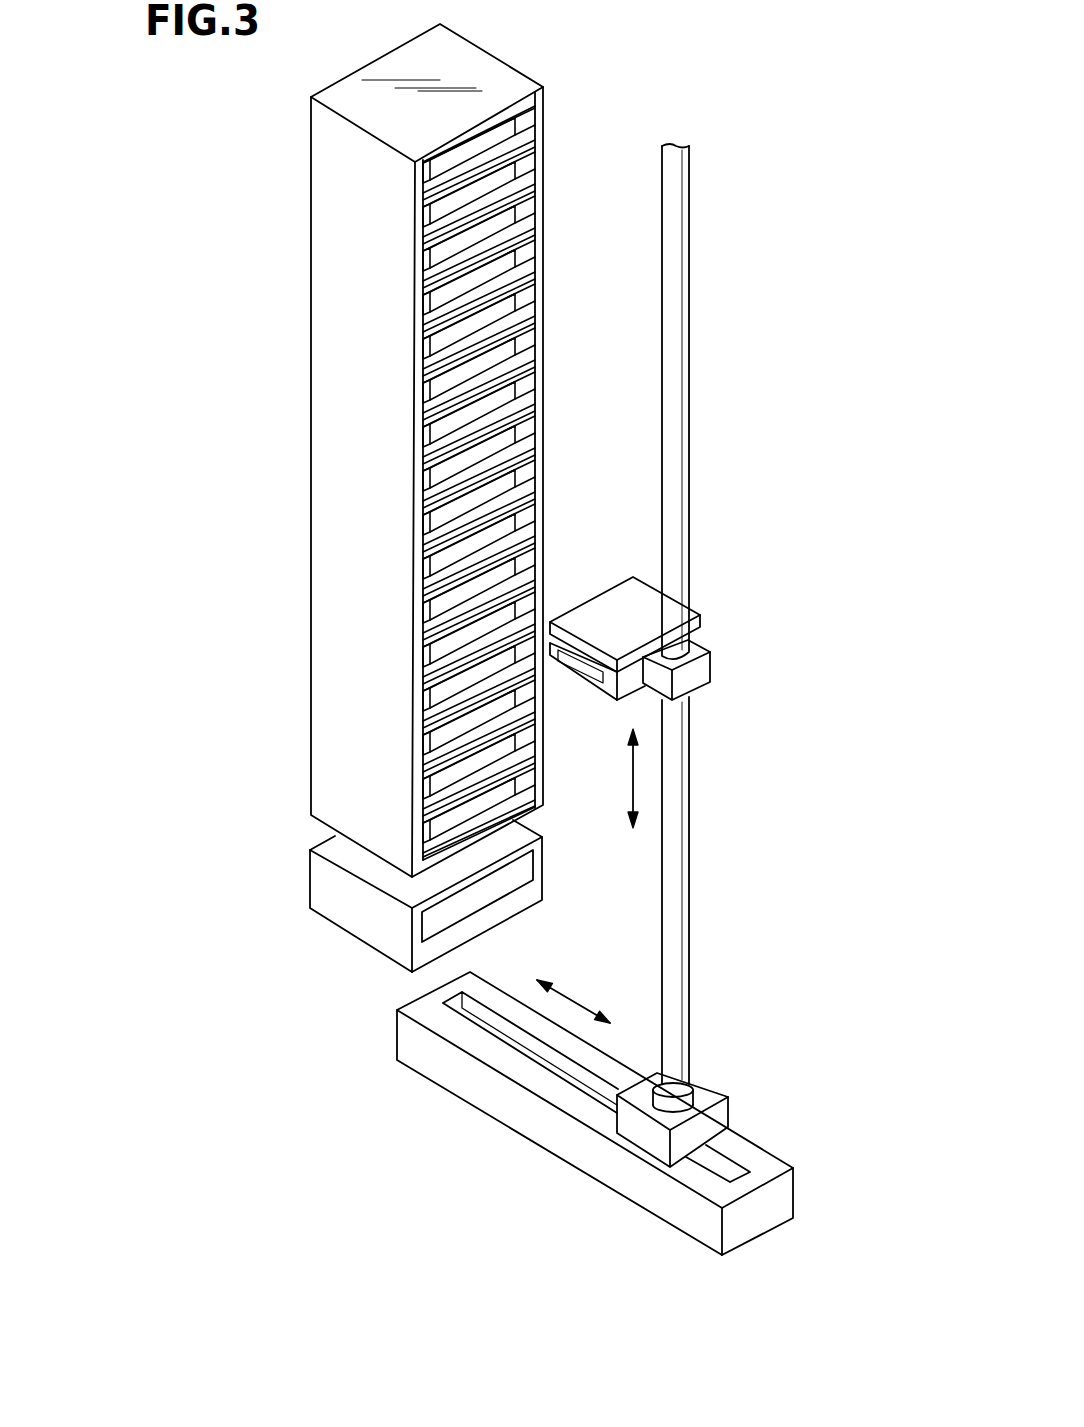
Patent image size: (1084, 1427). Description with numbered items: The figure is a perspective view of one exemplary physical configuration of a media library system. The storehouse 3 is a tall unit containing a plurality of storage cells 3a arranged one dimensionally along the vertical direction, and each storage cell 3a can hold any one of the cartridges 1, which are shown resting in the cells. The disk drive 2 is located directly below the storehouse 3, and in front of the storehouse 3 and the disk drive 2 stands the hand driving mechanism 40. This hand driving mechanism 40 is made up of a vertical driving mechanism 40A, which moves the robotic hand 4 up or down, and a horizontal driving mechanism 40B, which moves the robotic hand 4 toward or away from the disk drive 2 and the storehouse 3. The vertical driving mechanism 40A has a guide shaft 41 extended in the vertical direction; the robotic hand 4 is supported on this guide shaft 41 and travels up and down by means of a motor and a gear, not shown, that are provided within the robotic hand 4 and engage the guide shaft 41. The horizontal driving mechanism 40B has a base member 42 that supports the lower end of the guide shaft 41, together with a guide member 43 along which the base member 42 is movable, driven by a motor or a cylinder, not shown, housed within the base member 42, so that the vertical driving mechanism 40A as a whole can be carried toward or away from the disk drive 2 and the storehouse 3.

The cartridge 1 is at (505, 134).
The disk drive 2 is at (345, 910).
The storehouse 3 is at (335, 195).
The storage cell 3a is at (427, 360).
The robotic hand 4 is at (630, 614).
The hand driving mechanism 40 is at (632, 699).
The vertical driving mechanism 40A is at (729, 614).
The horizontal driving mechanism 40B is at (564, 1113).
The guide shaft 41 is at (682, 998).
The base member 42 is at (638, 1132).
The guide member 43 is at (505, 1110).